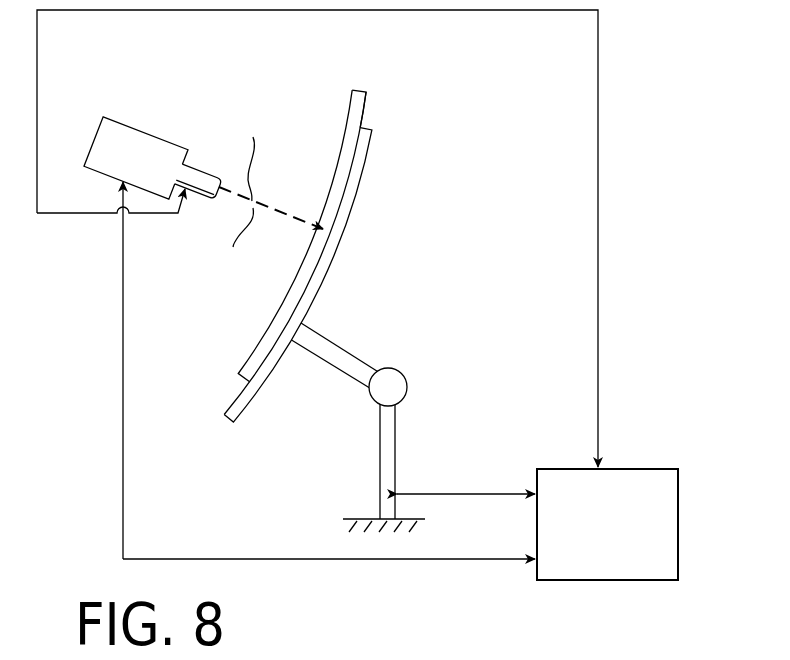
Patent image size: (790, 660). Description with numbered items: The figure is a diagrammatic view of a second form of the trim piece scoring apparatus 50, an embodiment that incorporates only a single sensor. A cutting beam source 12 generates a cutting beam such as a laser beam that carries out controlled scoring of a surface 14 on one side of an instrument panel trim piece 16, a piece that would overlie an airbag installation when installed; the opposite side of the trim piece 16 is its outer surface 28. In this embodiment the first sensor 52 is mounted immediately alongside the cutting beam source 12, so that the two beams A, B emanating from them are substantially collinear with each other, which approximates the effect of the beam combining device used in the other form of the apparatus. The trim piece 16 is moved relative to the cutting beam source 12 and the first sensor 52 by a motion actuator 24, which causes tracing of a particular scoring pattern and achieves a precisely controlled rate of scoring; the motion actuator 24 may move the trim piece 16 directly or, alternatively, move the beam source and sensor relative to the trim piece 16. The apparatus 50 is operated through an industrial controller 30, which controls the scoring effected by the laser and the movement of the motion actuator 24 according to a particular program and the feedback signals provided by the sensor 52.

The cutting beam source 12 is at (117, 119).
The surface 14 is at (345, 130).
The instrument panel trim piece 16 is at (366, 107).
The motion actuator 24 is at (401, 371).
The outer surface 28 is at (369, 152).
The industrial controller 30 is at (637, 468).
The apparatus 50 is at (100, 335).
The first sensor 52 is at (201, 196).
The cutting beam A is at (251, 149).
The sensor beam B is at (241, 246).